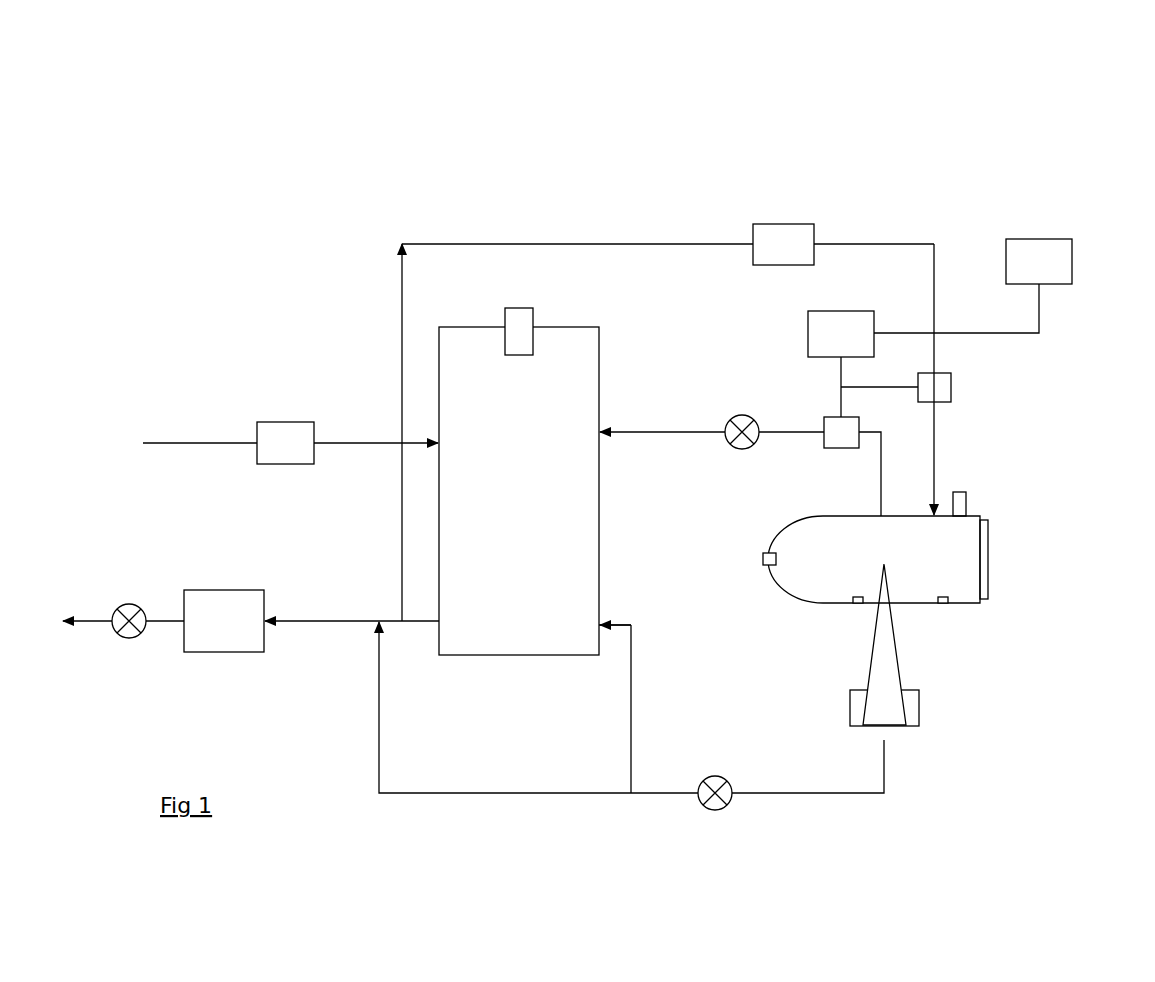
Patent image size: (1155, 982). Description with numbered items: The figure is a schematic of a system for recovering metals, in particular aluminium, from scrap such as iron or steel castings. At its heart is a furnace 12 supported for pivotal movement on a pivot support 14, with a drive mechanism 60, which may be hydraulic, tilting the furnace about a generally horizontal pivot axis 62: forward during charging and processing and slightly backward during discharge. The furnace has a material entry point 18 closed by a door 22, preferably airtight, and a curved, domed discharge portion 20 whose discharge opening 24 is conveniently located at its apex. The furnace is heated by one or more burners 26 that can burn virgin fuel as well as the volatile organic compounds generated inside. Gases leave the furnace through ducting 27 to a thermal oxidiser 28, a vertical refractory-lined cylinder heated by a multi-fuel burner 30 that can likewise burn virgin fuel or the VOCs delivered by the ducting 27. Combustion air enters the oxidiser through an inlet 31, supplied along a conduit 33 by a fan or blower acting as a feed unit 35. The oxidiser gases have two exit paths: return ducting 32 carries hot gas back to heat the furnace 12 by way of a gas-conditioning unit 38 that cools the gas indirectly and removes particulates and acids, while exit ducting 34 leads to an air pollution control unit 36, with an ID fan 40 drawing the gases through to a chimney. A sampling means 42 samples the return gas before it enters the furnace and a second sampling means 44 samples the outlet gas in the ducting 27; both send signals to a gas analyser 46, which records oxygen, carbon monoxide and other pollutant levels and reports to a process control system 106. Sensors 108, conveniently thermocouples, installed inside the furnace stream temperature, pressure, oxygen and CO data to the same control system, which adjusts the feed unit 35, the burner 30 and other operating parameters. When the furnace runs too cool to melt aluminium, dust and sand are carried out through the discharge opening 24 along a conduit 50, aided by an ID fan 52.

The furnace 12 is at (904, 532).
The pivot support 14 is at (889, 652).
The material entry point 18 is at (965, 572).
The discharge portion 20 is at (800, 543).
The door 22 is at (988, 537).
The discharge opening 24 is at (763, 559).
The burner 26 is at (966, 497).
The ducting 27 is at (670, 432).
The thermal oxidiser 28 is at (573, 350).
The multi-fuel burner 30 is at (521, 308).
The inlet 31 is at (415, 440).
The return ducting 32 is at (402, 333).
The conduit 33 is at (203, 443).
The exit ducting 34 is at (327, 621).
The feed unit 35 is at (289, 422).
The air pollution control unit 36 is at (227, 590).
The gas-conditioning unit 38 is at (786, 224).
The ID fan 40 is at (129, 605).
The sampling means 42 is at (951, 386).
The second sampling means 44 is at (826, 425).
The gas analyser 46 is at (847, 320).
The conduit 50 is at (773, 793).
The ID fan 52 is at (718, 776).
The drive mechanism 60 is at (919, 705).
The pivot axis 62 is at (884, 564).
The process control system 106 is at (1040, 239).
The sensors 108 is at (860, 603).